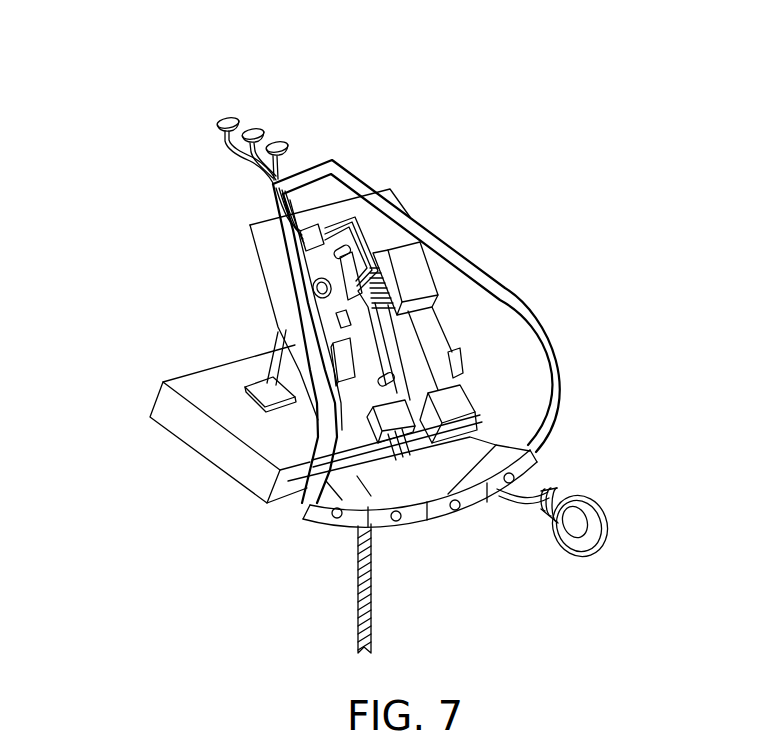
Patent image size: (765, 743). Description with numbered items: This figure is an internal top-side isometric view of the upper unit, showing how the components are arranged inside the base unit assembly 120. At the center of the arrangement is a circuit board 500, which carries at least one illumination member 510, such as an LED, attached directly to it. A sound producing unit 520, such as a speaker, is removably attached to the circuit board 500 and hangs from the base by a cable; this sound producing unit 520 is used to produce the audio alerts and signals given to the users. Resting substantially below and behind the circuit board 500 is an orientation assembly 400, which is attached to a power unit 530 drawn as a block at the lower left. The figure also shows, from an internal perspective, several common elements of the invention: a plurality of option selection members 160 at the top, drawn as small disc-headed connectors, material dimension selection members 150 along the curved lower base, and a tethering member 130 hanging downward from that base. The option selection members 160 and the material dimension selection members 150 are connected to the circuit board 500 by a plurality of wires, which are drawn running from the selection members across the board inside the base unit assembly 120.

The base unit assembly 120 is at (128, 197).
The tethering member 130 is at (370, 582).
The material dimension selection members 150 is at (401, 519).
The option selection members 160 is at (275, 143).
The orientation assembly 400 is at (284, 331).
The circuit board 500 is at (389, 189).
The illumination member 510 is at (395, 377).
The sound producing unit 520 is at (582, 555).
The power unit 530 is at (213, 443).